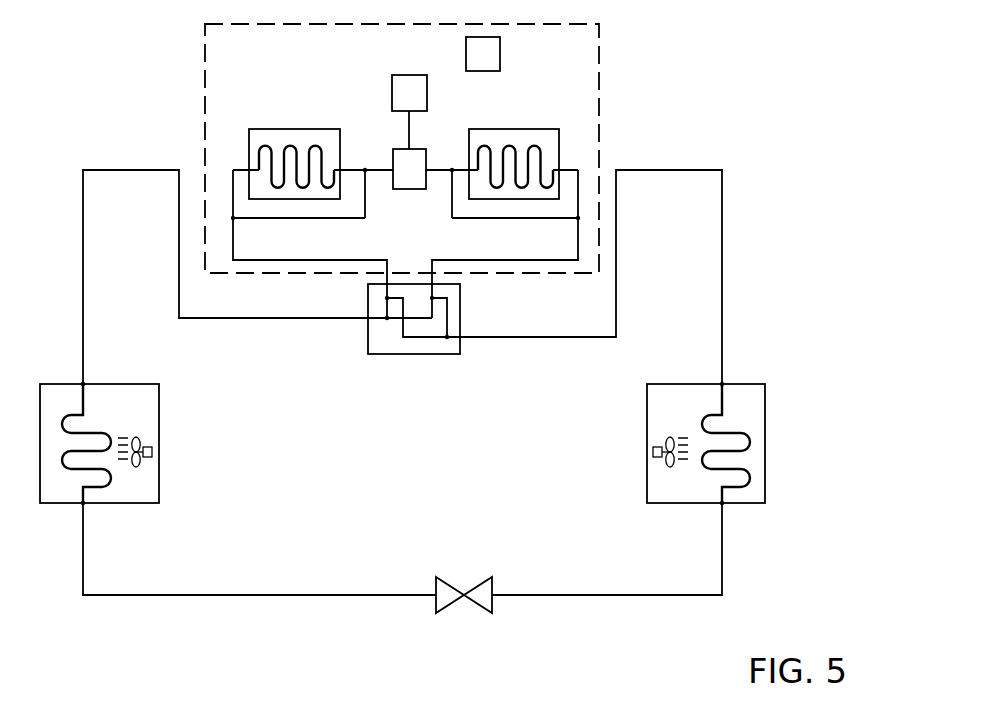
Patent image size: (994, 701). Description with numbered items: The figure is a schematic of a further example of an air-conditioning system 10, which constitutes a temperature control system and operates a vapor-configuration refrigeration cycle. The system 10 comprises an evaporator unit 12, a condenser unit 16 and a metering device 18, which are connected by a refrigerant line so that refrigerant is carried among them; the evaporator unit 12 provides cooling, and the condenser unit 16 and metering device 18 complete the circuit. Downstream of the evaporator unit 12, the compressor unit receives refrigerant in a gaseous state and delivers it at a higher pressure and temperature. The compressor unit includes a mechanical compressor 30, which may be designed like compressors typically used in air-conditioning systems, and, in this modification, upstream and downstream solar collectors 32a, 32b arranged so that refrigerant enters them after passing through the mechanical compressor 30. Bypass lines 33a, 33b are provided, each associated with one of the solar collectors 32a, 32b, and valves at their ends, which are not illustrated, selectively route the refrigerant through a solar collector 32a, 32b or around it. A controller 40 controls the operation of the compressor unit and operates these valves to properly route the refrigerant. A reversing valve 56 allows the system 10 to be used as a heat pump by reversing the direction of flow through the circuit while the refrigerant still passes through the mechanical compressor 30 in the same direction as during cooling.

The air-conditioning system 10 is at (672, 112).
The evaporator unit 12 is at (160, 473).
The condenser unit 16 is at (765, 452).
The metering device 18 is at (440, 577).
The mechanical compressor 30 is at (413, 149).
The upstream solar collector 32a is at (312, 130).
The downstream solar collector 32b is at (515, 130).
The bypass line 33a is at (313, 218).
The bypass line 33b is at (498, 218).
The controller 40 is at (500, 56).
The reversing valve 56 is at (423, 354).